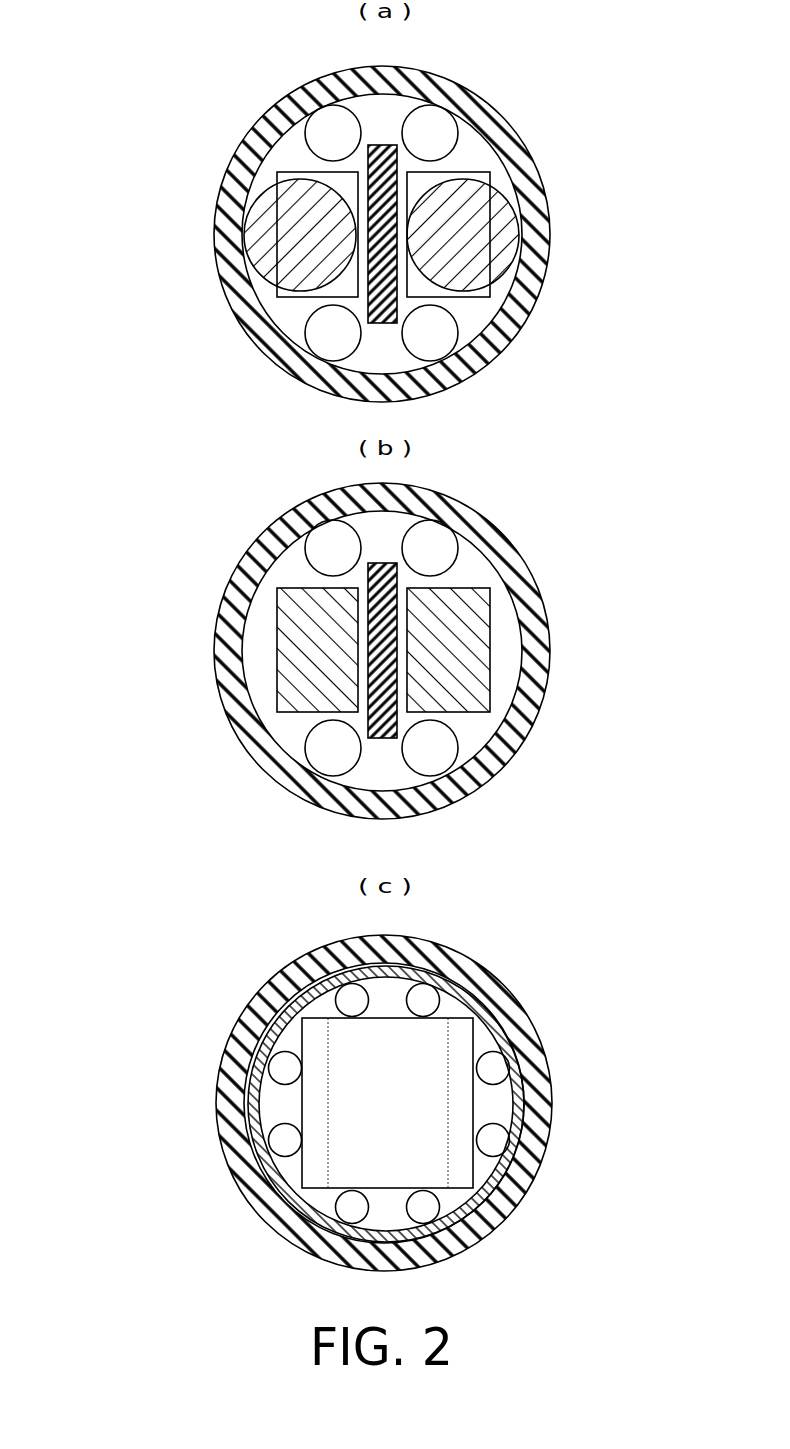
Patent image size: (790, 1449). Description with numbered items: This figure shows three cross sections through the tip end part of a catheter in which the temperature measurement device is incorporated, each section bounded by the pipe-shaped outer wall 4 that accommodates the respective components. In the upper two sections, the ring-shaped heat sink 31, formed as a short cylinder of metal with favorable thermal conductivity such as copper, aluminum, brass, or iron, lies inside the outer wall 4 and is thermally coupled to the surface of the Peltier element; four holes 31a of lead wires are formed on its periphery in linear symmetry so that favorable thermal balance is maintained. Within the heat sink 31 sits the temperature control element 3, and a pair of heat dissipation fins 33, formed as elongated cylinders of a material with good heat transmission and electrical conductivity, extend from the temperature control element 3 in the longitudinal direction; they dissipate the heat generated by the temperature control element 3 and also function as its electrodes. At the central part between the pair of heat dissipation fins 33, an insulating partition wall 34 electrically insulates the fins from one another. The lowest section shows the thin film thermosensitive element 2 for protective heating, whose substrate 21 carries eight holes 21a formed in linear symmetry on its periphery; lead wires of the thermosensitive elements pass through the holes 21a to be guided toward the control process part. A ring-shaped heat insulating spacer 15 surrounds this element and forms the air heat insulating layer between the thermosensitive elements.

The pipe-shaped outer wall 4 is at (223, 212).
The heat sink 31 is at (493, 160).
The holes 31a is at (442, 132).
The temperature control element 3 is at (418, 293).
The heat dissipation fin 33 is at (513, 237).
The insulating partition wall 34 is at (373, 305).
The ring-shaped heat insulating spacer 15 is at (503, 1023).
The substrate 21 is at (483, 1173).
The holes 21a is at (423, 996).
The thin film thermosensitive element for protective heating 2 is at (405, 1121).